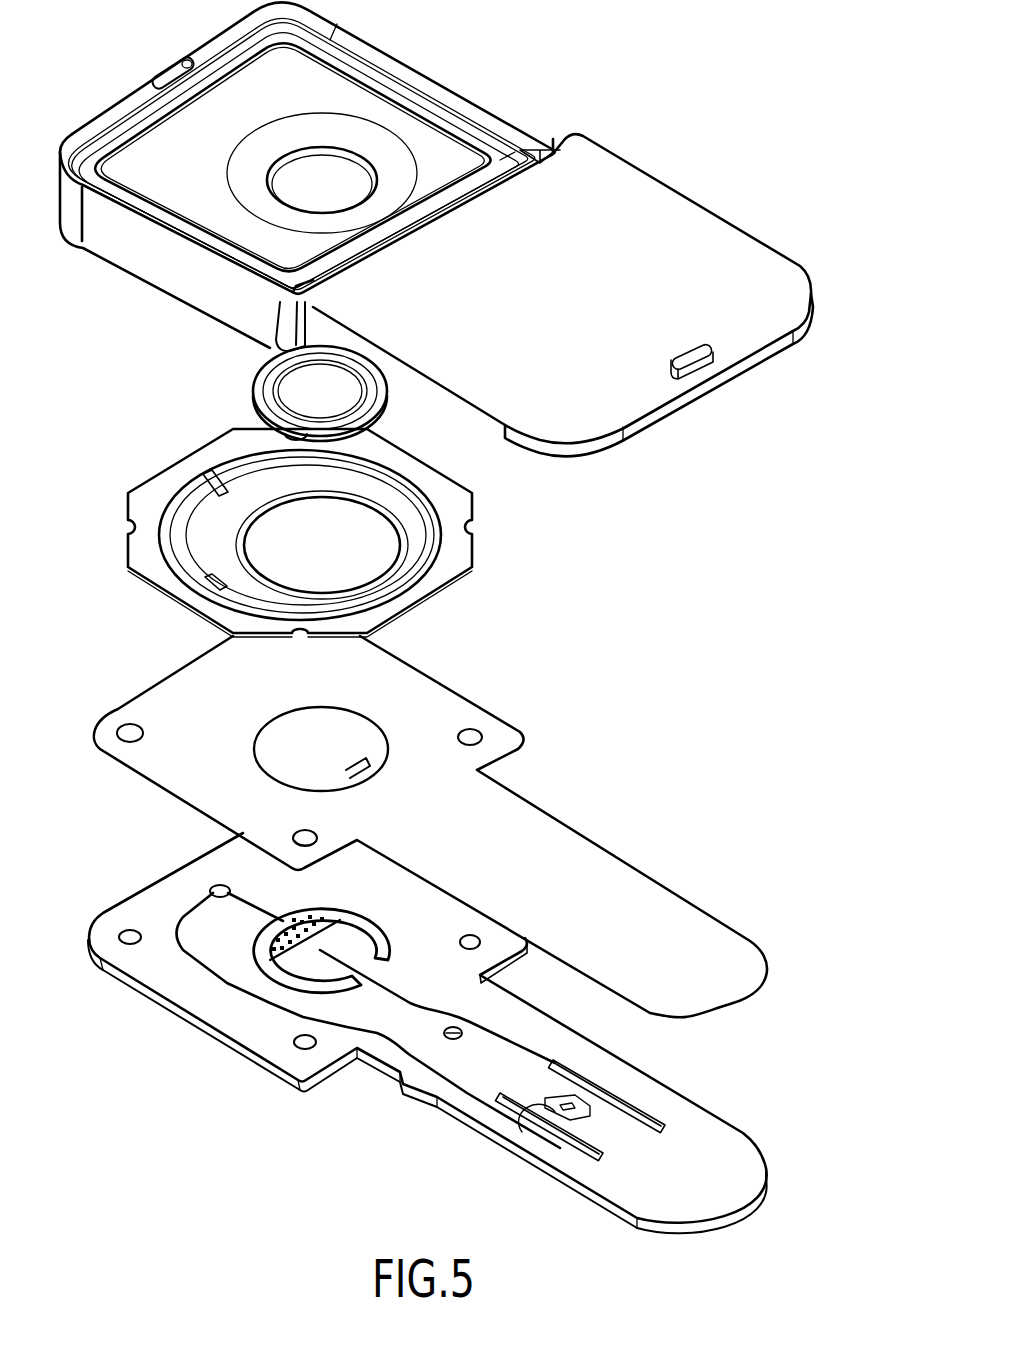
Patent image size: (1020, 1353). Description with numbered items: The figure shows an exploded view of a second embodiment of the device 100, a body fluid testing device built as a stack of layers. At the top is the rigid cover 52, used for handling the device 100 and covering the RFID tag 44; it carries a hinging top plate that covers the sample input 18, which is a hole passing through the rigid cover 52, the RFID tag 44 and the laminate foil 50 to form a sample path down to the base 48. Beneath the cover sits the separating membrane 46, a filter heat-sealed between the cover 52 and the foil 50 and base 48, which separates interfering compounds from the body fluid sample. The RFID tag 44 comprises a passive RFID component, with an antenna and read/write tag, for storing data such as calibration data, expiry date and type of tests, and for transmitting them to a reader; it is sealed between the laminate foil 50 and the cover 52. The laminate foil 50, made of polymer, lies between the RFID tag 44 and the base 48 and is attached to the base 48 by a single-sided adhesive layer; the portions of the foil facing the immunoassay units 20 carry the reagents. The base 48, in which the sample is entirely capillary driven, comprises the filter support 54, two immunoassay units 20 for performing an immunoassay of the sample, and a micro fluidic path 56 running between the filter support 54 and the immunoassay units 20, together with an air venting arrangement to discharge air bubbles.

The device 100 is at (437, 617).
The sample input 18 is at (322, 180).
The cover 52 is at (318, 170).
The separating membrane 46 is at (337, 394).
The RFID tag 44 is at (432, 537).
The laminate foil 50 is at (598, 877).
The micro fluidic path 56 is at (487, 1027).
The base 48 is at (727, 1150).
The filter support 54 is at (300, 967).
The immunoassay units 20 is at (560, 1138).